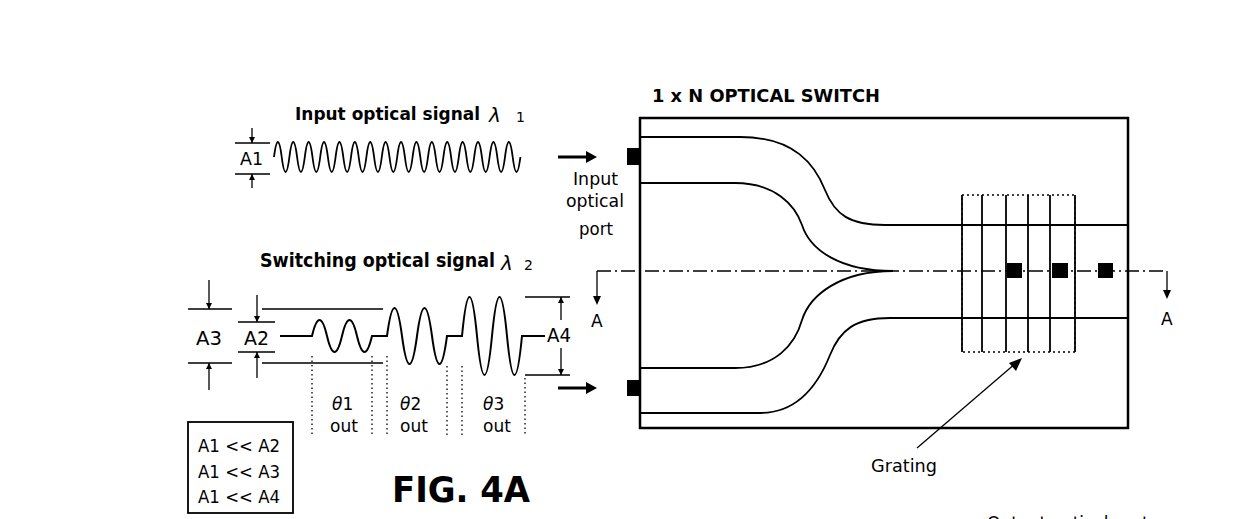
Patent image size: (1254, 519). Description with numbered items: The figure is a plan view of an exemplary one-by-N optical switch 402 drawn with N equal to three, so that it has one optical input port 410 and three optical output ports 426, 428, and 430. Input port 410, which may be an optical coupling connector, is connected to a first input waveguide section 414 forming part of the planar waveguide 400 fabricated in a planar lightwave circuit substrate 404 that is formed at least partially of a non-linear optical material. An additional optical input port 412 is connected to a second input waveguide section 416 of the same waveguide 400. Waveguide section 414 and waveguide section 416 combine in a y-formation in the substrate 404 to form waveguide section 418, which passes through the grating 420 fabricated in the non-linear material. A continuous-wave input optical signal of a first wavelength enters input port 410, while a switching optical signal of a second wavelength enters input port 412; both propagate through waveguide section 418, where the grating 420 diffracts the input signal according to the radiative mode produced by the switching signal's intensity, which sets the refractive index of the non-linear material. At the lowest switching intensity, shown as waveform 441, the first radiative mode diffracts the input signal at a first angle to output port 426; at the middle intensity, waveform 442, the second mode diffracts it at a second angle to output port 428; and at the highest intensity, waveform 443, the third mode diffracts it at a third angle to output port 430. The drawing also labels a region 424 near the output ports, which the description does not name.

The planar waveguide 400 is at (901, 304).
The 1×N optical switch 402 is at (1193, 138).
The planar lightwave circuit substrate 404 is at (900, 148).
The optical input port 410 is at (625, 157).
The additional optical input port 412 is at (626, 388).
The first input waveguide section 414 is at (718, 168).
The second input waveguide section 416 is at (735, 393).
The waveguide section 418 is at (937, 270).
The grating 420 is at (977, 355).
The output waveguide region 424 is at (1114, 303).
The first output port 426 is at (1015, 263).
The second output port 428 is at (1061, 263).
The third output port 430 is at (1105, 263).
The waveform 441 is at (335, 320).
The waveform 442 is at (410, 312).
The waveform 443 is at (481, 300).